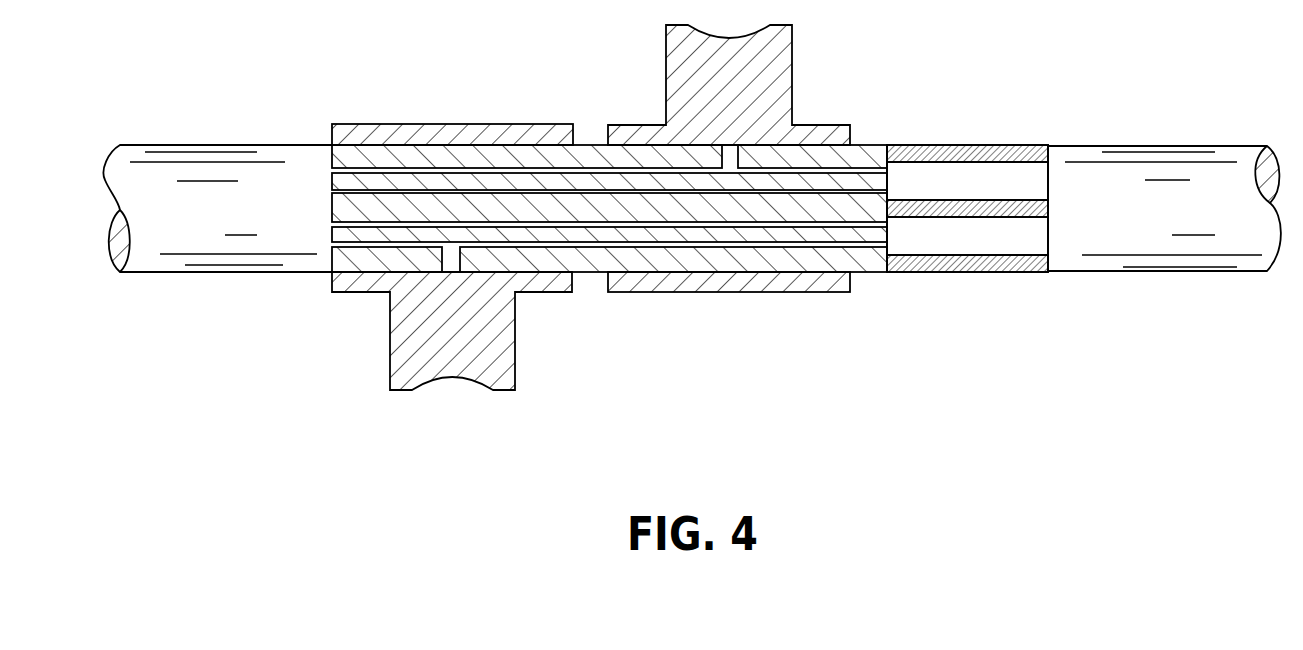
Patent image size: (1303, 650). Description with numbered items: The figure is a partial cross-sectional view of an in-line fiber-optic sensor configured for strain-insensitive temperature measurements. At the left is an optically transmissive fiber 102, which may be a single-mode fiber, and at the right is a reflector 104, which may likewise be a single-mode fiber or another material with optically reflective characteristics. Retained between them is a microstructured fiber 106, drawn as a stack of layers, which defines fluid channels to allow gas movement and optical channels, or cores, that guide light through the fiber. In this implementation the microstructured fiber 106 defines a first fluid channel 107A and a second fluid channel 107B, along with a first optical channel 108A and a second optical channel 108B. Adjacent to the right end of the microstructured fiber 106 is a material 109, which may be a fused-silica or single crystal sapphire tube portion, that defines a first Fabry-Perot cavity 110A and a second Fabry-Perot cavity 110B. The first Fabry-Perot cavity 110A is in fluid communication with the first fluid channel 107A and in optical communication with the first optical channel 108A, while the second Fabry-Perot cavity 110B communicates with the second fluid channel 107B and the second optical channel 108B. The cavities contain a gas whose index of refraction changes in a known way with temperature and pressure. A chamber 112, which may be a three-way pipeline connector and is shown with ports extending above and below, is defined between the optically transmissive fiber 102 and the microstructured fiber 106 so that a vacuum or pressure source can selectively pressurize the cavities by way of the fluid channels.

The optically transmissive fiber 102 is at (225, 145).
The reflector 104 is at (1155, 146).
The microstructured fiber 106 is at (585, 143).
The first fluid channel 107A is at (497, 168).
The second fluid channel 107B is at (600, 247).
The first optical channel 108A is at (860, 190).
The second optical channel 108B is at (878, 227).
The material defining Fabry-Perot cavity 109 is at (957, 145).
The first Fabry-Perot cavity 110A is at (1020, 180).
The second Fabry-Perot cavity 110B is at (1020, 235).
The chamber 112 is at (404, 124).